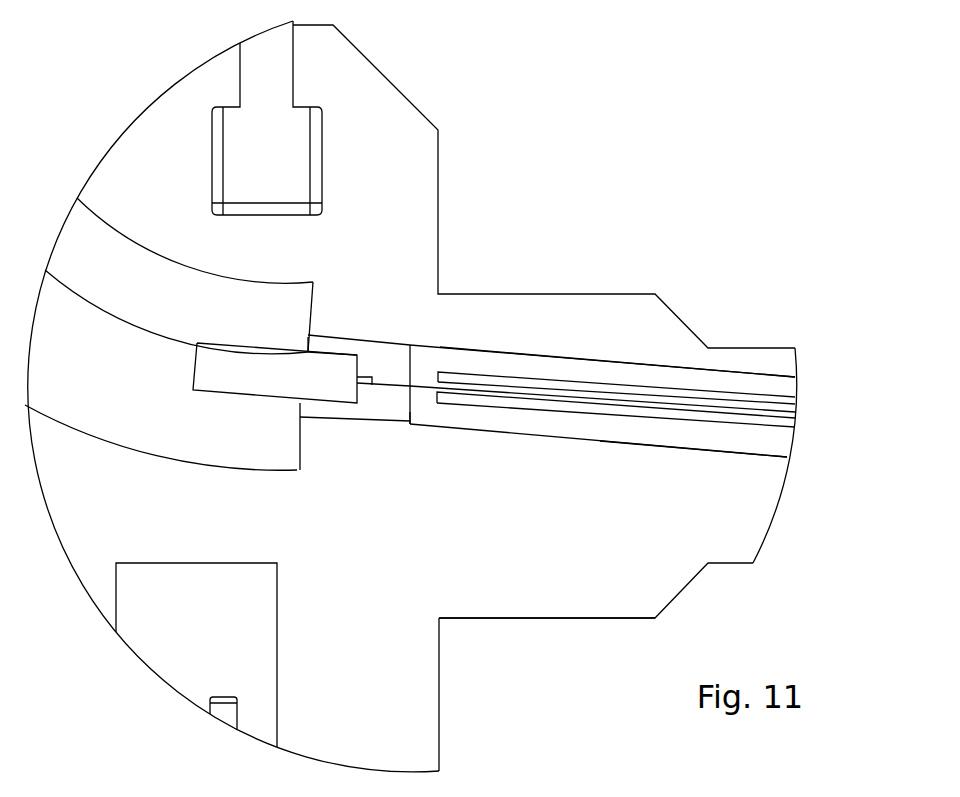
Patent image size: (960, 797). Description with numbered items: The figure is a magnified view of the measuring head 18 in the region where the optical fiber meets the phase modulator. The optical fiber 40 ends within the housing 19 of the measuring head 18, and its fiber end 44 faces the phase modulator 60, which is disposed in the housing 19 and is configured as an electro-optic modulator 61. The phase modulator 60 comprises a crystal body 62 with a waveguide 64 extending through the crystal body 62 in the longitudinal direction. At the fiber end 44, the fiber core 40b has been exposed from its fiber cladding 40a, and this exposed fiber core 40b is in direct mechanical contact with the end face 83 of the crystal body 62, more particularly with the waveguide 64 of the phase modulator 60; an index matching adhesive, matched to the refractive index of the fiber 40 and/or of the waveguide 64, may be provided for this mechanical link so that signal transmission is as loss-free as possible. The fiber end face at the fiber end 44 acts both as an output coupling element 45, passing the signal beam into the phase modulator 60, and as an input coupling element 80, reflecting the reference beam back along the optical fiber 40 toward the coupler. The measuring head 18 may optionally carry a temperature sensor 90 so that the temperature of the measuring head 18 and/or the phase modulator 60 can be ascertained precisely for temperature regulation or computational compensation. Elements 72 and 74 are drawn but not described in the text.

The measuring head 18 is at (498, 196).
The housing 19 is at (417, 677).
The optical fiber 40 is at (147, 308).
The fiber cladding 40a is at (323, 393).
The fiber core 40b is at (371, 384).
The fiber end 44 is at (352, 345).
The output coupling element 45 is at (363, 312).
The phase modulator 60 is at (612, 335).
The electro-optic modulator 61 is at (553, 362).
The crystal body 62 is at (754, 394).
The waveguide 64 is at (679, 410).
The lower wall 72 is at (588, 413).
The upper rod 74 is at (507, 380).
The input coupling element 80 is at (388, 362).
The end face 83 is at (410, 414).
The temperature sensor 90 is at (287, 170).